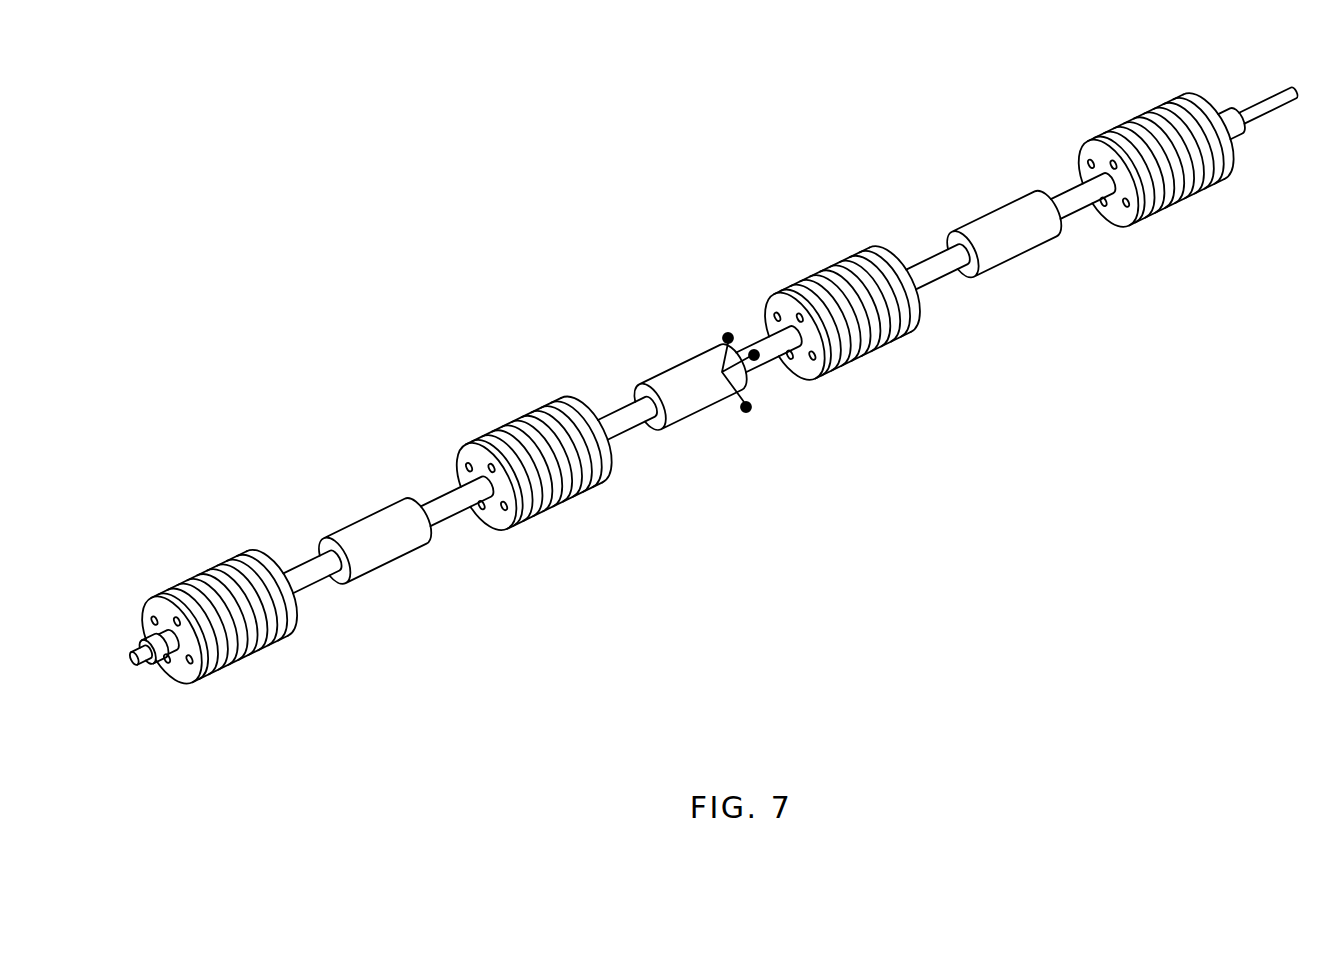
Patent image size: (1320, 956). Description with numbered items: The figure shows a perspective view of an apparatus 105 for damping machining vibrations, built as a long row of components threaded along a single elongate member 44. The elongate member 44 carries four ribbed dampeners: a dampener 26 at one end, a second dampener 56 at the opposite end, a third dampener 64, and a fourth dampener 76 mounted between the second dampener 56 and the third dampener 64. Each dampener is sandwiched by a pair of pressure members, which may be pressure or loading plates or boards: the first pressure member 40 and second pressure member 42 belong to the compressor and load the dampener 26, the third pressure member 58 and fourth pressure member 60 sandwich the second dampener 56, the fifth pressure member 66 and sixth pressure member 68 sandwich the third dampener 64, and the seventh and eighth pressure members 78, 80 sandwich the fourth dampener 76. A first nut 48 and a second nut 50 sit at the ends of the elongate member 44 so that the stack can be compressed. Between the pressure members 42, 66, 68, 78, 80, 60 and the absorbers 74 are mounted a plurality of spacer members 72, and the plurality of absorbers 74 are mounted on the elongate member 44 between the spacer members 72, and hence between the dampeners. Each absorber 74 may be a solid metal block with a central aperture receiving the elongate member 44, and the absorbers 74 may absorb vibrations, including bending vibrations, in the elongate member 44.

The apparatus 105 is at (1145, 479).
The dampener 26 is at (1170, 207).
The first pressure member 40 is at (1223, 178).
The second pressure member 42 is at (1117, 218).
The elongate member 44 is at (1266, 109).
The first nut 48 is at (1238, 132).
The second nut 50 is at (165, 633).
The second dampener 56 is at (243, 665).
The third pressure member 58 is at (185, 668).
The fourth pressure member 60 is at (290, 630).
The third dampener 64 is at (882, 355).
The fifth pressure member 66 is at (920, 322).
The sixth pressure member 68 is at (810, 365).
The spacer members 72 is at (310, 577).
The absorbers 74 is at (373, 533).
The fourth dampener 76 is at (527, 430).
The seventh pressure member 78 is at (582, 415).
The eighth pressure member 80 is at (477, 452).